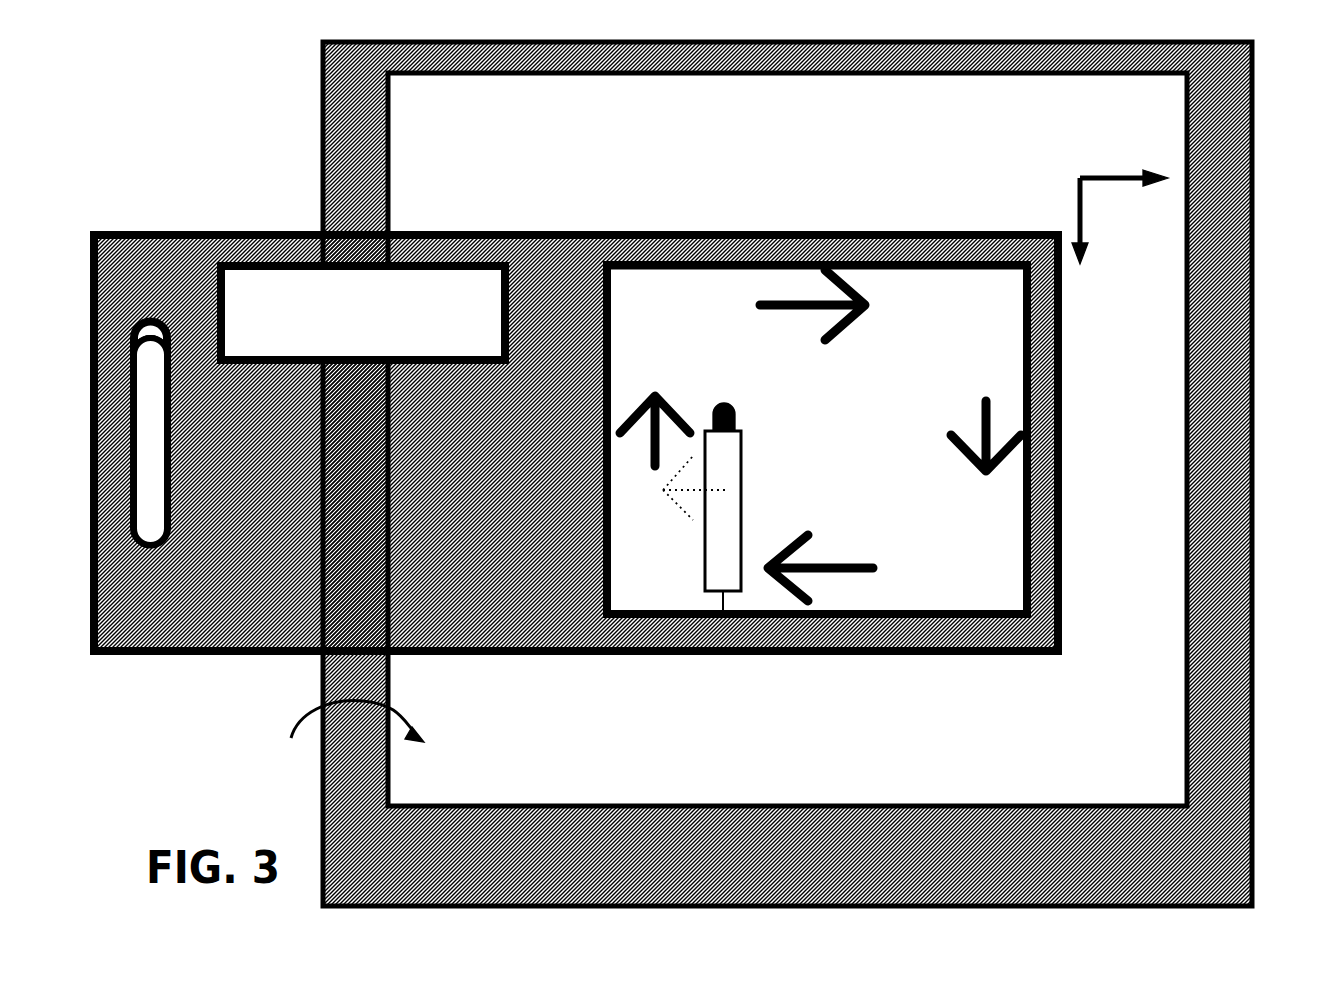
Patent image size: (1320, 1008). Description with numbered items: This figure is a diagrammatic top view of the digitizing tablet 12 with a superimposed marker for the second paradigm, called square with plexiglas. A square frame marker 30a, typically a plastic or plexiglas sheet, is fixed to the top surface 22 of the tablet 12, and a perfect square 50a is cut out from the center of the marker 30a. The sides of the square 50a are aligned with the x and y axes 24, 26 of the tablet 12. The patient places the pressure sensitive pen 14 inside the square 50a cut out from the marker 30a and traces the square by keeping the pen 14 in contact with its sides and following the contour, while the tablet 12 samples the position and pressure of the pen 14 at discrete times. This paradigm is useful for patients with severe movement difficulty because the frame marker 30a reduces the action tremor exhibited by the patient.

The digitizing tablet 12 is at (1207, 747).
The pressure sensitive pen 14 is at (722, 443).
The top surface 22 is at (347, 735).
The x axis 24 is at (1072, 218).
The y axis 26 is at (1100, 170).
The square frame marker 30a is at (157, 620).
The square 50a is at (822, 604).